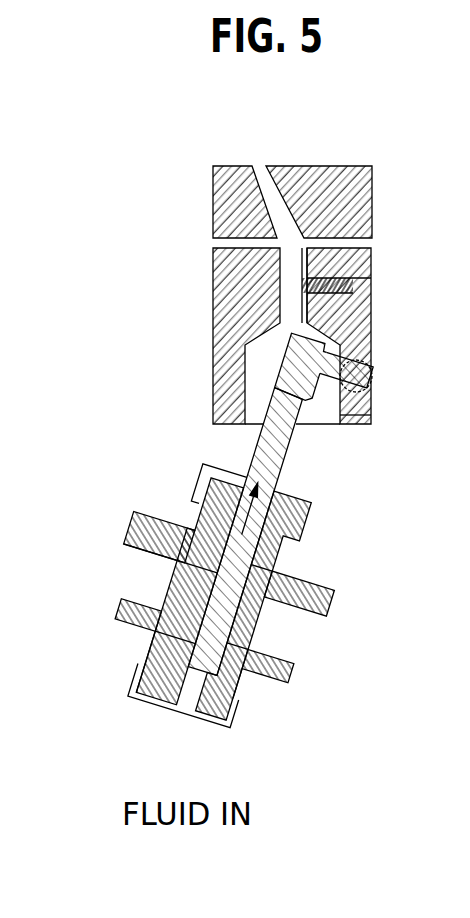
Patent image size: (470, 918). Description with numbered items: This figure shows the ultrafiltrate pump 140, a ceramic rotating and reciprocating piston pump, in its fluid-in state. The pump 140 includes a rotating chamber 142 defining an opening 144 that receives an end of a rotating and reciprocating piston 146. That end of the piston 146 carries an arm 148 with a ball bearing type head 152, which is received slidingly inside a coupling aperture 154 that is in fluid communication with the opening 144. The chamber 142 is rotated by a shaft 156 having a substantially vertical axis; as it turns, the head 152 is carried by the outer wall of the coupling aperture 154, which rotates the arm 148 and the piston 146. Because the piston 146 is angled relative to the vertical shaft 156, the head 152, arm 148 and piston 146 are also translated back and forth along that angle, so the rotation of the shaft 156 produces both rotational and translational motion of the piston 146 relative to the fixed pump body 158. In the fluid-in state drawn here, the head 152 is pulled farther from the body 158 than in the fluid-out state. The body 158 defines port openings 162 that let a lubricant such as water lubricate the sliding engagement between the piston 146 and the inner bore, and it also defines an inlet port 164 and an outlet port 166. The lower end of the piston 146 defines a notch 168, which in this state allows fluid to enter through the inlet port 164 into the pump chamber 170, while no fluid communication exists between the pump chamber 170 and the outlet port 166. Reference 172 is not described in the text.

The rotating reciprocating piston pump 140 is at (192, 184).
The rotating chamber 142 is at (213, 340).
The opening 144 is at (318, 428).
The rotating and reciprocating piston 146 is at (318, 407).
The arm 148 is at (373, 384).
The ball bearing type head 152 is at (372, 362).
The coupling aperture 154 is at (370, 404).
The shaft 156 is at (280, 290).
The pump body 158 is at (273, 698).
The port openings 162 is at (163, 520).
The inlet port 164 is at (115, 606).
The outlet port 166 is at (272, 696).
The notch 168 is at (153, 647).
The pump chamber 170 is at (185, 698).
The outlet 172 is at (469, 738).